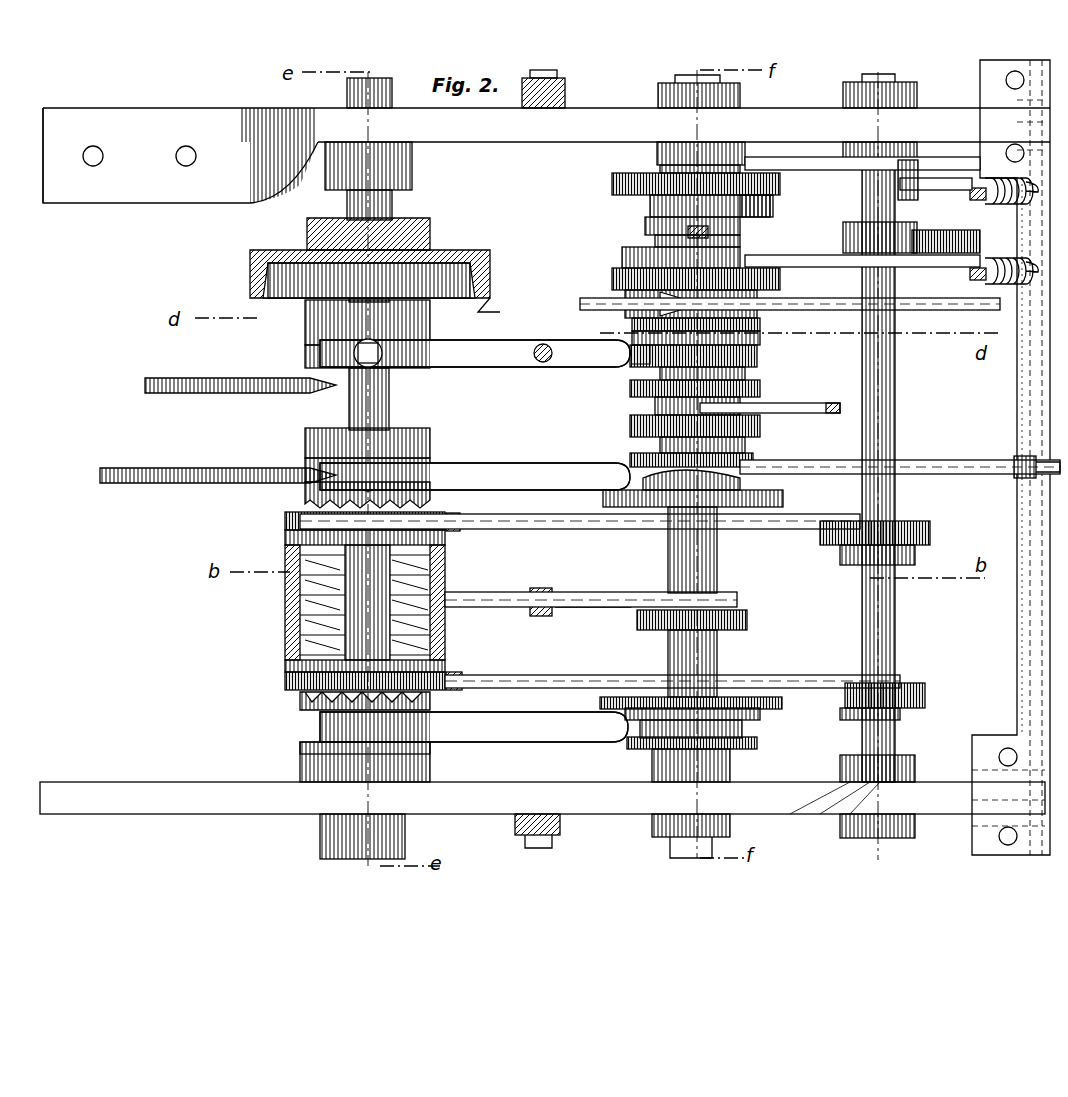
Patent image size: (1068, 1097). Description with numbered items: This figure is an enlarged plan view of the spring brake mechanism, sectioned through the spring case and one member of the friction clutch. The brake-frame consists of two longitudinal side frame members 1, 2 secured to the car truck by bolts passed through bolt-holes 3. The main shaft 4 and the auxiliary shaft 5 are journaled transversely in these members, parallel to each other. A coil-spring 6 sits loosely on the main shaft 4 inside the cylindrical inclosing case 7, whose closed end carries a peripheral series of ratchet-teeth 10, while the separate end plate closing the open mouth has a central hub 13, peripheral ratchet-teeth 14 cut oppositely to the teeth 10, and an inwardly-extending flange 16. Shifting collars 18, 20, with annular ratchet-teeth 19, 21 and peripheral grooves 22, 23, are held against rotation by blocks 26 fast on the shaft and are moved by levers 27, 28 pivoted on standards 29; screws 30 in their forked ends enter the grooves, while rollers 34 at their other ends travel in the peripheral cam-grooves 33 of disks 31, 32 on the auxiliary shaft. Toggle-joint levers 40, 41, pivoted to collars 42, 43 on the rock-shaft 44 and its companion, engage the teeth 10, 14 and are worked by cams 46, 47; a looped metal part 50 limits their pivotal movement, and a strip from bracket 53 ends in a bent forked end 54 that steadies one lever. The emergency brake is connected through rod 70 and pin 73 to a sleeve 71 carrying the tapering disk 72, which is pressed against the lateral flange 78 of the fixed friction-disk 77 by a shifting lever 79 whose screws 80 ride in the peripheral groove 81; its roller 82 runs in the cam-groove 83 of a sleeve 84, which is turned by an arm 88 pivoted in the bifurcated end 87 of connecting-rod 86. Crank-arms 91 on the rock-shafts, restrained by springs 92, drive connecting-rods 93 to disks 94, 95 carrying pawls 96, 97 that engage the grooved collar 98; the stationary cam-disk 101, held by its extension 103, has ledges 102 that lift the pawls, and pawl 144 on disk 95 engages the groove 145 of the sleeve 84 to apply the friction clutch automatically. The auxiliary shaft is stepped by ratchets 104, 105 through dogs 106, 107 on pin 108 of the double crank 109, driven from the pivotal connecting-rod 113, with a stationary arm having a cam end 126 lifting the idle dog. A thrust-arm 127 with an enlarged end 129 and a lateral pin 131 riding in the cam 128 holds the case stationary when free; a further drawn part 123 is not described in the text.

The side frame member 1 is at (607, 125).
The side frame member 2 is at (486, 800).
The bolt-holes 3 is at (1008, 84).
The main shaft 4 is at (420, 410).
The auxiliary shaft 5 is at (712, 660).
The coil-spring 6 is at (300, 616).
The inclosing case 7 is at (300, 640).
The peripheral series of ratchet-teeth 10 is at (300, 524).
The central hub 13 is at (430, 652).
The peripheral series of ratchet-teeth 14 is at (320, 682).
The inwardly-extending flange 16 is at (310, 665).
The shifting collar 18 is at (314, 462).
The annular series of ratchet-teeth 19 is at (310, 494).
The shifting collar 20 is at (330, 730).
The annular series of ratchet-teeth 21 is at (430, 700).
The peripheral groove 22 is at (336, 372).
The peripheral groove 23 is at (338, 732).
The blocks 26 is at (398, 440).
The lever 27 is at (518, 478).
The lever 28 is at (518, 730).
The standards 29 is at (540, 340).
The screws 30 is at (380, 470).
The disk 31 is at (760, 460).
The disk 32 is at (760, 744).
The peripheral cam-groove 33 is at (730, 500).
The rollers 34 is at (632, 508).
The toggle-joint lever 40 is at (562, 530).
The toggle-joint lever 41 is at (586, 682).
The collar 42 is at (880, 528).
The collar 43 is at (900, 690).
The rock-shaft 44 is at (898, 406).
The cam 46 is at (660, 496).
The cam 47 is at (780, 698).
The metal part 50 is at (712, 510).
The bracket 53 is at (547, 110).
The bent forked end 54 is at (462, 530).
The rod 70 is at (168, 394).
The sleeve 71 is at (320, 368).
The disk 72 is at (423, 286).
The pin 73 is at (305, 392).
The friction-disk 77 is at (418, 240).
The lateral flange 78 is at (490, 270).
The shifting lever 79 is at (508, 358).
The screws 80 is at (386, 352).
The peripheral groove 81 is at (320, 352).
The roller 82 is at (616, 366).
The cam-groove 83 is at (760, 356).
The sleeve 84 is at (820, 321).
The connecting-rod 86 is at (942, 310).
The bifurcated end 87 is at (740, 252).
The arm 88 is at (650, 300).
The crank-arm 91 is at (932, 188).
The spring 92 is at (985, 282).
The connecting-rods 93 is at (828, 166).
The disk 94 is at (612, 190).
The disk 95 is at (760, 278).
The pawl 96 is at (740, 170).
The pawl 97 is at (680, 250).
The collar 98 is at (680, 205).
The cam-disk 101 is at (668, 262).
The ledges 102 is at (700, 232).
The extension 103 is at (700, 220).
The ratchet 104 is at (800, 391).
The ratchet 105 is at (758, 428).
The dog 106 is at (670, 404).
The dog 107 is at (740, 478).
The pin 108 is at (790, 412).
The double crank 109 is at (688, 450).
The pivotal connecting-rod 113 is at (130, 483).
The gear 123 is at (692, 420).
The cam end 126 is at (740, 384).
The arm 127 is at (498, 592).
The cam 128 is at (720, 620).
The enlarged end 129 is at (720, 602).
The lateral pin 131 is at (740, 602).
The pawl 144 is at (696, 331).
The groove 145 is at (742, 328).